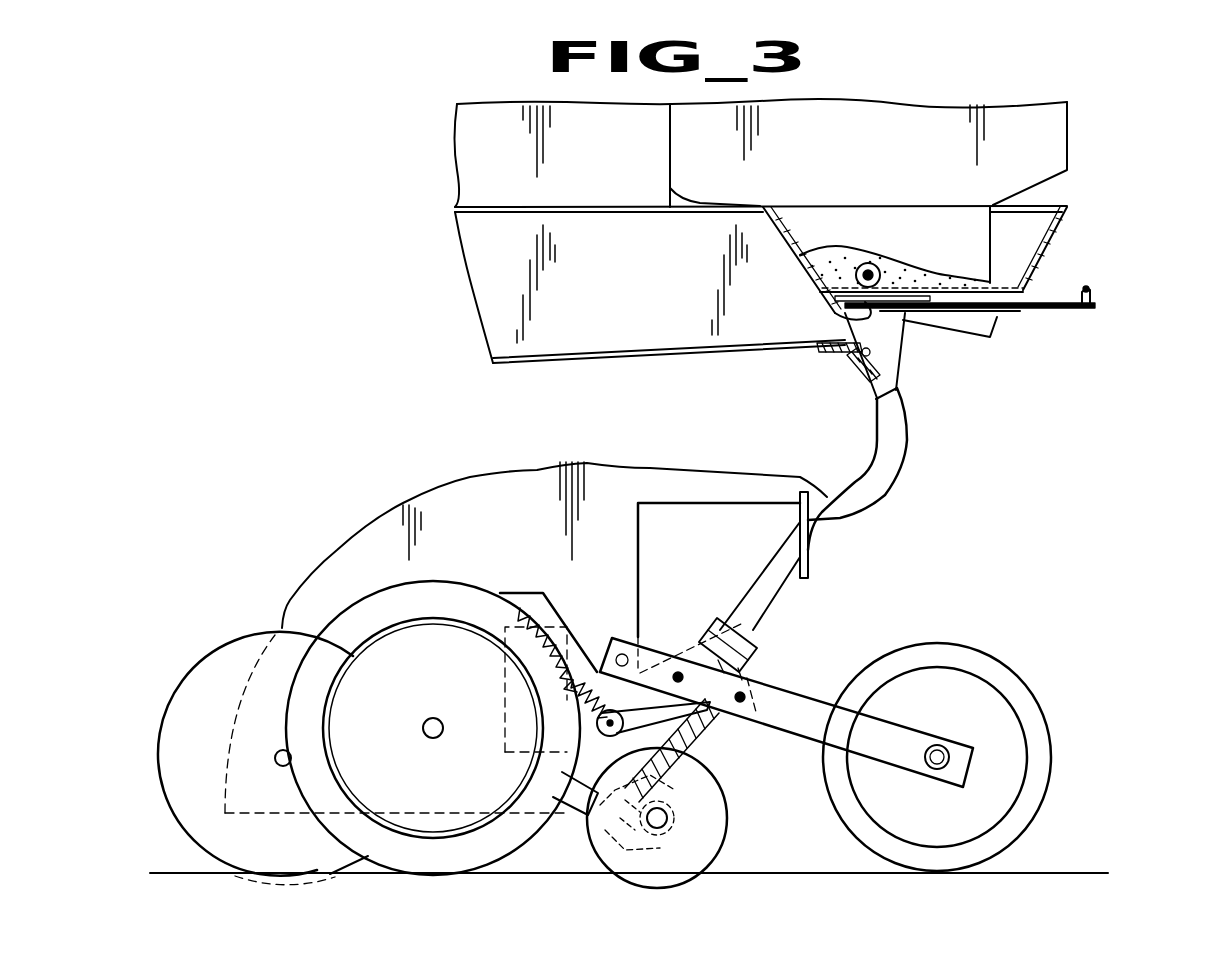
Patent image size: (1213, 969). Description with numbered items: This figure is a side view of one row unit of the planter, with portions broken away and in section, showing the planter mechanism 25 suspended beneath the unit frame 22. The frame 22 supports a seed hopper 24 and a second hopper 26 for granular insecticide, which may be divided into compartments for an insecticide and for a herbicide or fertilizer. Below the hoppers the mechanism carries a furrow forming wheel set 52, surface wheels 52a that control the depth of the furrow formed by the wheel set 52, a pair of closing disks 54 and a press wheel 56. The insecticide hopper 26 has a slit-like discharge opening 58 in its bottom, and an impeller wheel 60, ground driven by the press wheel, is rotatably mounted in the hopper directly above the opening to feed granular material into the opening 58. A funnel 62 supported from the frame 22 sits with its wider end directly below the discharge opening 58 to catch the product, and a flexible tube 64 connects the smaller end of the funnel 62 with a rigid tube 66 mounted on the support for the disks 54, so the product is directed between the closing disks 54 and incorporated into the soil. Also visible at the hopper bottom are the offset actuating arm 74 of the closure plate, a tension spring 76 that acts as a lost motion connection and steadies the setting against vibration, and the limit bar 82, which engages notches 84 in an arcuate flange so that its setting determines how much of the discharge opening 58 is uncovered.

The frame 22 is at (478, 292).
The seed hopper 24 is at (462, 154).
The planter mechanism 25 is at (950, 598).
The second hopper 26 is at (800, 268).
The furrow forming wheel set 52 is at (415, 590).
The surface wheels 52a is at (225, 648).
The closing wheels or disks 54 is at (717, 822).
The press wheel 56 is at (1045, 758).
The discharge opening 58 is at (838, 320).
The impeller wheel 60 is at (880, 268).
The funnel 62 is at (890, 372).
The flexible tube 64 is at (890, 471).
The rigid tube 66 is at (713, 642).
The offset actuating arm 74 is at (1063, 317).
The tension spring 76 is at (1108, 302).
The limit bar 82 is at (1040, 300).
The notches 84 is at (1017, 310).